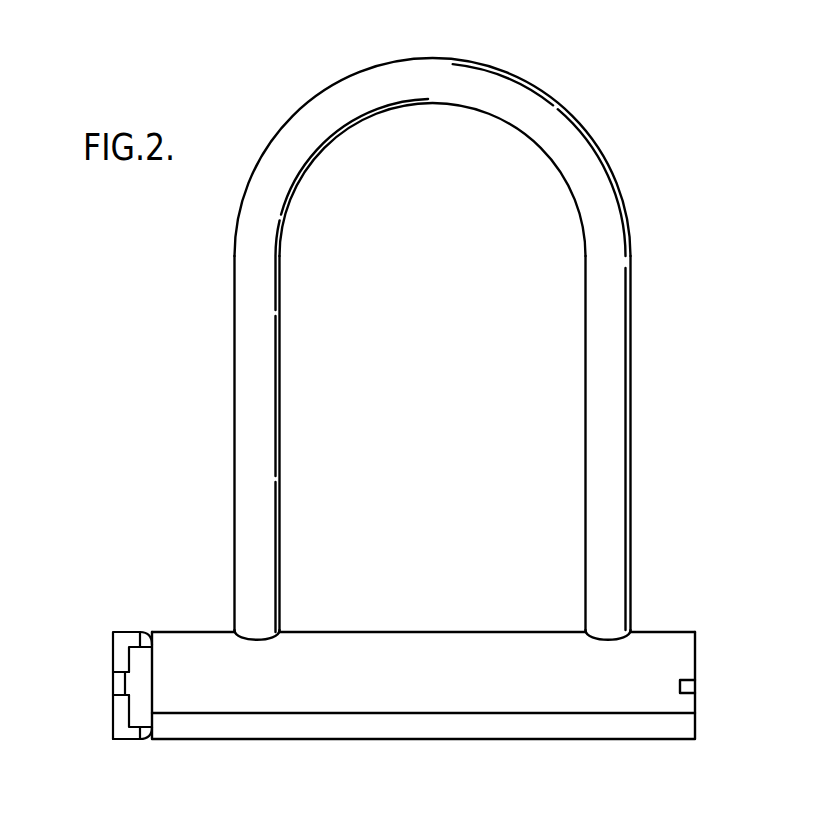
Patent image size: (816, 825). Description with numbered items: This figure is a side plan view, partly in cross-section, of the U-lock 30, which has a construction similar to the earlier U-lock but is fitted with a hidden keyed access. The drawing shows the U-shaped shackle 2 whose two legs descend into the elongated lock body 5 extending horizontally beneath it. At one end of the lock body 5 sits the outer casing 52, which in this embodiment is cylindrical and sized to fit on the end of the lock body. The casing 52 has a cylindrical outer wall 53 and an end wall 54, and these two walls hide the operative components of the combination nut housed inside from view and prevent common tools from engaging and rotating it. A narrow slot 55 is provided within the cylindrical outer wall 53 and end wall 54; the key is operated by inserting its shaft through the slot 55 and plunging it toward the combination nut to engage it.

The U-lock 30 is at (449, 328).
The shackle leg 2 is at (590, 336).
The lock body 5 is at (661, 632).
The outer casing 52 is at (123, 739).
The cylindrical outer wall 53 is at (123, 632).
The end wall 54 is at (112, 655).
The narrow slot 55 is at (112, 687).